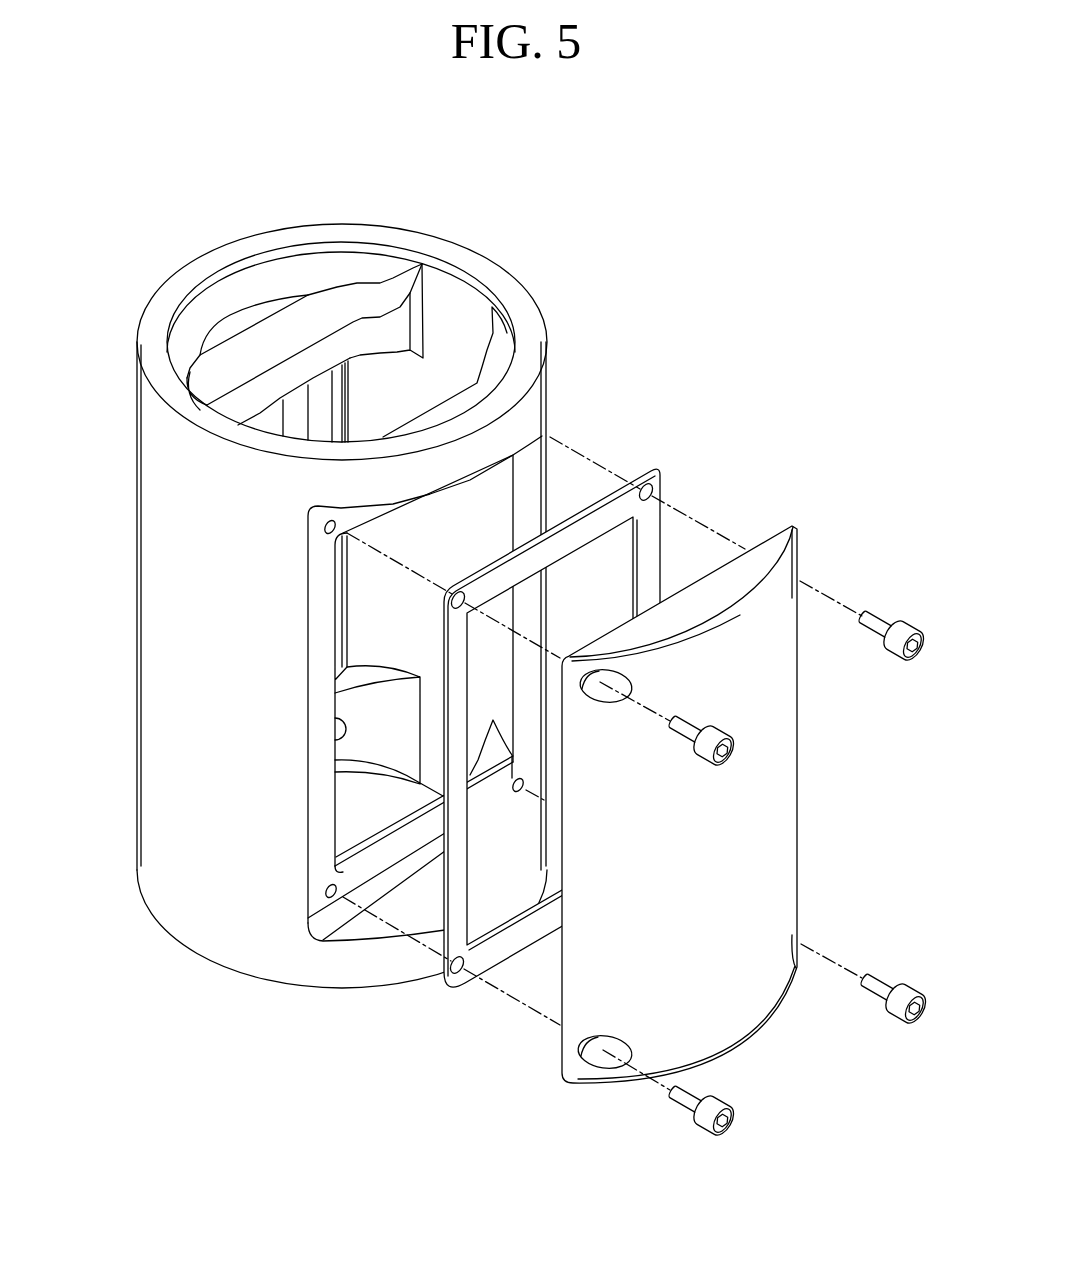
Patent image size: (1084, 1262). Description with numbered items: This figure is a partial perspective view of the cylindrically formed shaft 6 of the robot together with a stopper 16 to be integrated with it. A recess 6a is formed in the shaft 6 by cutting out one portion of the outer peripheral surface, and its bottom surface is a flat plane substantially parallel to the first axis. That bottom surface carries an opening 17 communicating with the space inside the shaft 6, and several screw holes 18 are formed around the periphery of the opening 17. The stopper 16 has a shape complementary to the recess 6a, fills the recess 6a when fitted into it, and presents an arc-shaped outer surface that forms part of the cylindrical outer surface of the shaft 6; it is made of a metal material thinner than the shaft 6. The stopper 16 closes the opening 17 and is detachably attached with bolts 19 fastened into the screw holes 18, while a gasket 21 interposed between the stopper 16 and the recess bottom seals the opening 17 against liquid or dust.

The shaft 6 is at (344, 606).
The recess 6a is at (322, 808).
The stopper 16 is at (775, 825).
The opening 17 is at (335, 742).
The screw hole 18 is at (327, 532).
The bolt 19 is at (905, 628).
The gasket 21 is at (652, 553).